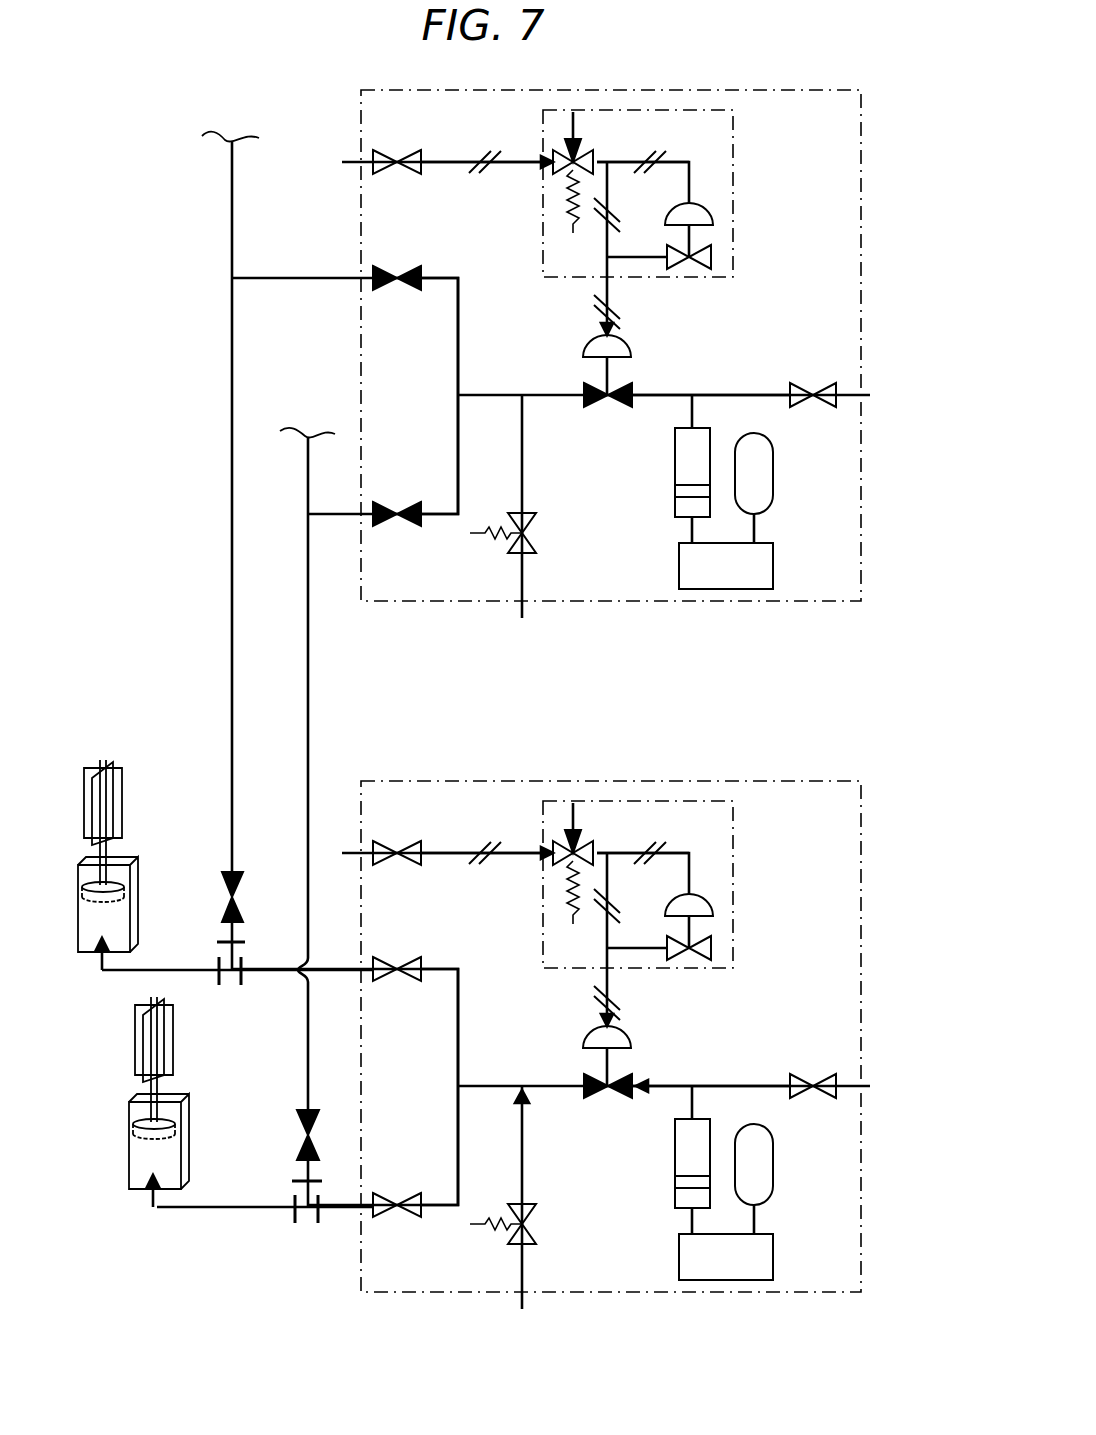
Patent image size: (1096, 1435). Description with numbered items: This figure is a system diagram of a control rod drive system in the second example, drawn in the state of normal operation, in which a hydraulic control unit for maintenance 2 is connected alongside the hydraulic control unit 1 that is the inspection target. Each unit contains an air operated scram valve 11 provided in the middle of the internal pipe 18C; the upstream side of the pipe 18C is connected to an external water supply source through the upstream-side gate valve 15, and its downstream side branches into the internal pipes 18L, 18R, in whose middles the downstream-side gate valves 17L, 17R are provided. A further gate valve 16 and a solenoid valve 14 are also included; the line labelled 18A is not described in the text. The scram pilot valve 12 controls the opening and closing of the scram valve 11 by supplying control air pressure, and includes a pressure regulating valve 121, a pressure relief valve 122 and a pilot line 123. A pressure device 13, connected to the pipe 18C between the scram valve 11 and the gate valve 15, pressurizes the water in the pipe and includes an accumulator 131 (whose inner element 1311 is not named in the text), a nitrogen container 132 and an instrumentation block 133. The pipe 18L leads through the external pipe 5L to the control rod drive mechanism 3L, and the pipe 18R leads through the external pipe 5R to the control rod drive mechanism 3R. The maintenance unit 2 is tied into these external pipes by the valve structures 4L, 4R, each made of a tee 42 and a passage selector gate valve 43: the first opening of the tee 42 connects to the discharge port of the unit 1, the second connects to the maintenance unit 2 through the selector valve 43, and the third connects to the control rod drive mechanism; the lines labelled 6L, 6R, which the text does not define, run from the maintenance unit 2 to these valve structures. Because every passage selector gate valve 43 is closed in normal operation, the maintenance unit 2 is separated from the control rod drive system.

The hydraulic control unit 1 is at (767, 782).
The hydraulic control unit for maintenance 2 is at (440, 601).
The control rod drive mechanism 3R is at (86, 955).
The control rod drive mechanism 3L is at (143, 1190).
The valve structure 4R is at (219, 872).
The valve structure 4L is at (289, 1128).
The external pipe 5R is at (155, 968).
The external pipe 5L is at (197, 1210).
The right pipe 6R is at (232, 474).
The left pipe 6L is at (308, 700).
The scram valve 11 is at (585, 350).
The scram pilot valve 12 is at (733, 143).
The pressure device 13 is at (719, 847).
The solenoid valve 14 is at (540, 539).
The upstream-side gate valve 15 is at (800, 384).
The gate valve 16 is at (410, 151).
The downstream-side gate valve 17R is at (394, 267).
The downstream-side gate valve 17L is at (416, 504).
The supply line 18A is at (452, 172).
The internal pipe 18R is at (458, 300).
The internal pipe 18L is at (458, 421).
The internal pipe 18C is at (728, 393).
The tee 42 is at (241, 987).
The passage selector gate valve 43 is at (245, 912).
The pressure regulating valve 121 is at (716, 212).
The pressure relief valve 122 is at (561, 151).
The pilot line 123 is at (678, 161).
The accumulator 131 is at (649, 818).
The piston 1311 is at (633, 1194).
The nitrogen container 132 is at (760, 475).
The instrumentation block 133 is at (760, 560).